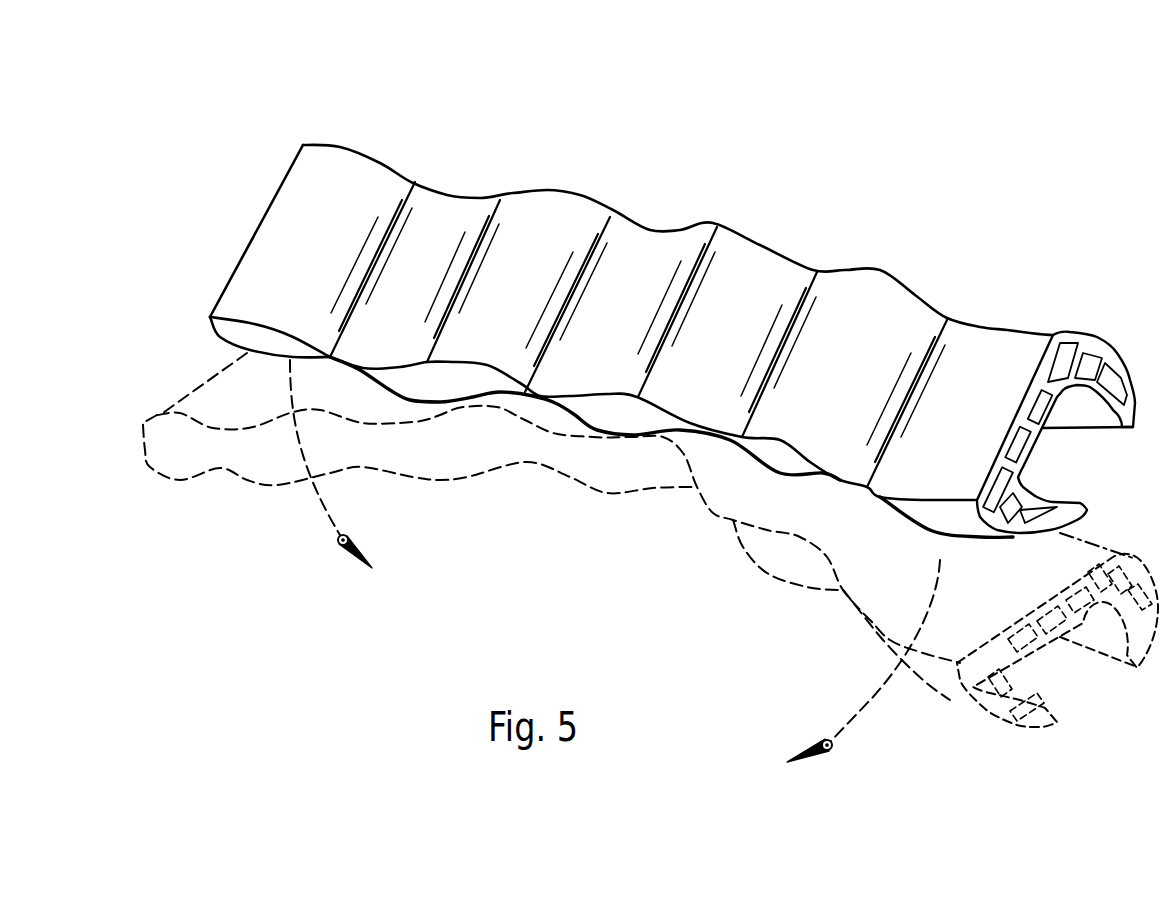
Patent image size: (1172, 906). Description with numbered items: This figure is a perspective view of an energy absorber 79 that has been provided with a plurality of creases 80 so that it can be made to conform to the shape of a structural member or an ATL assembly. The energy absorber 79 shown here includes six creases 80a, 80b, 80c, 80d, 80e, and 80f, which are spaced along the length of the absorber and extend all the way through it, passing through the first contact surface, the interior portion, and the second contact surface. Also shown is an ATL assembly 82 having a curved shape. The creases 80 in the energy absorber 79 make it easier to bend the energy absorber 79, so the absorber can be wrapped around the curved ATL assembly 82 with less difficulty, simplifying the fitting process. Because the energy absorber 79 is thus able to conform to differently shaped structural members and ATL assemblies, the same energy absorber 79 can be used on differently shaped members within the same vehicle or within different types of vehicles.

The creases 80 is at (708, 112).
The crease 80a is at (403, 205).
The crease 80b is at (497, 215).
The crease 80c is at (600, 226).
The crease 80d is at (700, 260).
The crease 80e is at (803, 290).
The crease 80f is at (933, 340).
The energy absorber 79 is at (1005, 350).
The ATL assembly 82 is at (975, 715).